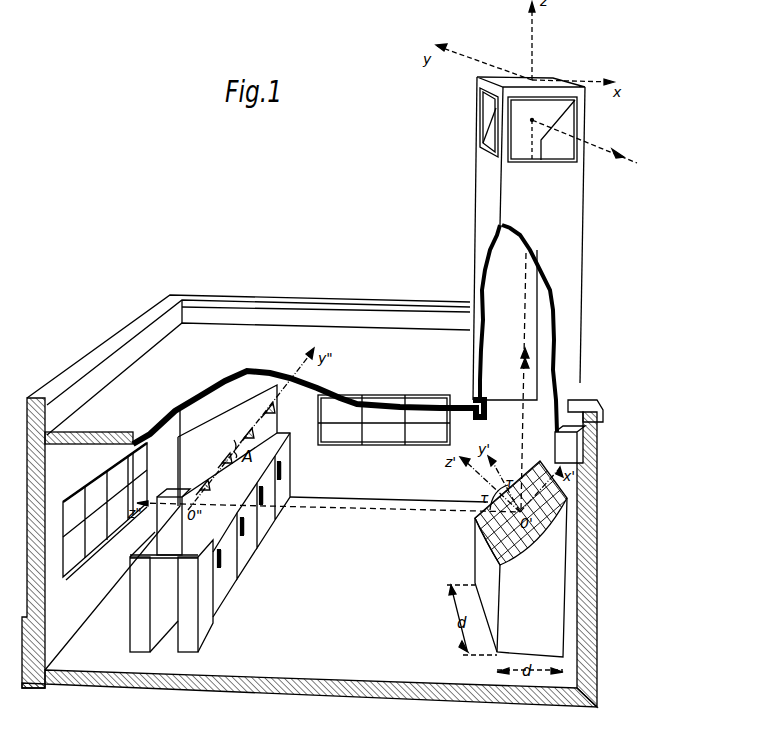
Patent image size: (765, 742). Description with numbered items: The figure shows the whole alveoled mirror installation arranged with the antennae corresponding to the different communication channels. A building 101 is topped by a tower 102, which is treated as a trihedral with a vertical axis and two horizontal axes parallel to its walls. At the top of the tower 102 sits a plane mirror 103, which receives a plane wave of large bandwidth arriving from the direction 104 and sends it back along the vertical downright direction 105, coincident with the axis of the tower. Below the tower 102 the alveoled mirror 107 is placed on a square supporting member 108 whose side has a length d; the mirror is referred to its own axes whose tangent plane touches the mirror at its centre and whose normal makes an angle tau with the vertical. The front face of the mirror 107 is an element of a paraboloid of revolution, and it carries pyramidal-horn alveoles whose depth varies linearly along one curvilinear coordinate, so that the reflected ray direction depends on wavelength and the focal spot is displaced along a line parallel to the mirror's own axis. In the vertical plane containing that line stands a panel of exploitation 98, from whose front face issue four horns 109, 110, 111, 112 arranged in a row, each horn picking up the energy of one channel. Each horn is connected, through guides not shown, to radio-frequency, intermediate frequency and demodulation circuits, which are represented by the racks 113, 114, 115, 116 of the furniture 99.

The panel of exploitation 98 is at (167, 545).
The furniture 99 is at (188, 643).
The building 101 is at (140, 328).
The tower 102 is at (478, 214).
The plane mirror 103 is at (490, 116).
The direction of the incoming plane wave 104 is at (584, 141).
The vertical downright direction 105 is at (523, 316).
The alveoled mirror 107 is at (510, 547).
The pedestal 108 is at (480, 556).
The horn 109 is at (202, 485).
The horn 110 is at (222, 459).
The horn 111 is at (243, 433).
The horn 112 is at (262, 407).
The rack 113 is at (221, 598).
The rack 114 is at (246, 562).
The rack 115 is at (268, 522).
The rack 116 is at (290, 493).